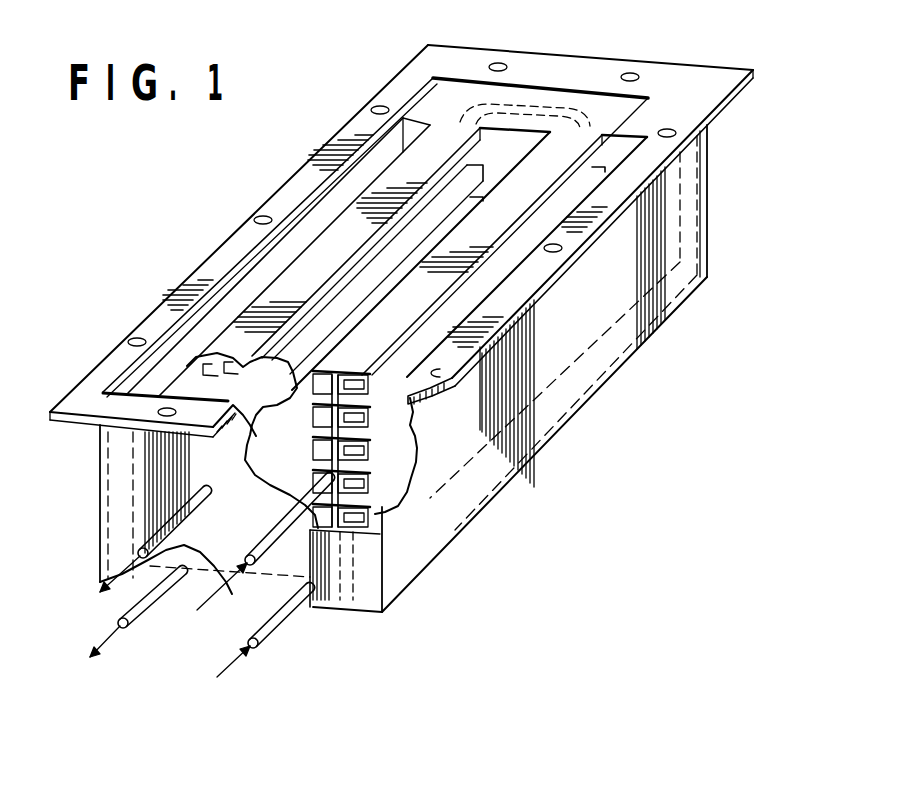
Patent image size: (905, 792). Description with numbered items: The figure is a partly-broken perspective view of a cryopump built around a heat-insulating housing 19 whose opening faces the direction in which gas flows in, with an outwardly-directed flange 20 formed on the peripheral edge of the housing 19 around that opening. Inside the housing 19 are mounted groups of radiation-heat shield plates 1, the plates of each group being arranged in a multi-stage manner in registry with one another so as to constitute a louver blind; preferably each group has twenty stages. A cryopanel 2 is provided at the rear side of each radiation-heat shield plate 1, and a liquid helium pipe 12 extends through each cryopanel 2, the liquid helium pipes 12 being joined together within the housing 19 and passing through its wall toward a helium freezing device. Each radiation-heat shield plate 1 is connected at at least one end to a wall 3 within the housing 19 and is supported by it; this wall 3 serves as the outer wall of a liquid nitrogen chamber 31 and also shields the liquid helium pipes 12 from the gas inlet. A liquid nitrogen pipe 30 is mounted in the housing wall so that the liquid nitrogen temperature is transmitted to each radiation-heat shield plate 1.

The radiation-heat shield plates 1 is at (332, 246).
The cryopanel 2 is at (173, 380).
The wall 3 is at (507, 147).
The liquid helium pipe 12 is at (403, 473).
The housing 19 is at (657, 217).
The flange 20 is at (703, 78).
The liquid nitrogen pipe 30 is at (147, 617).
The liquid nitrogen chamber 31 is at (642, 115).